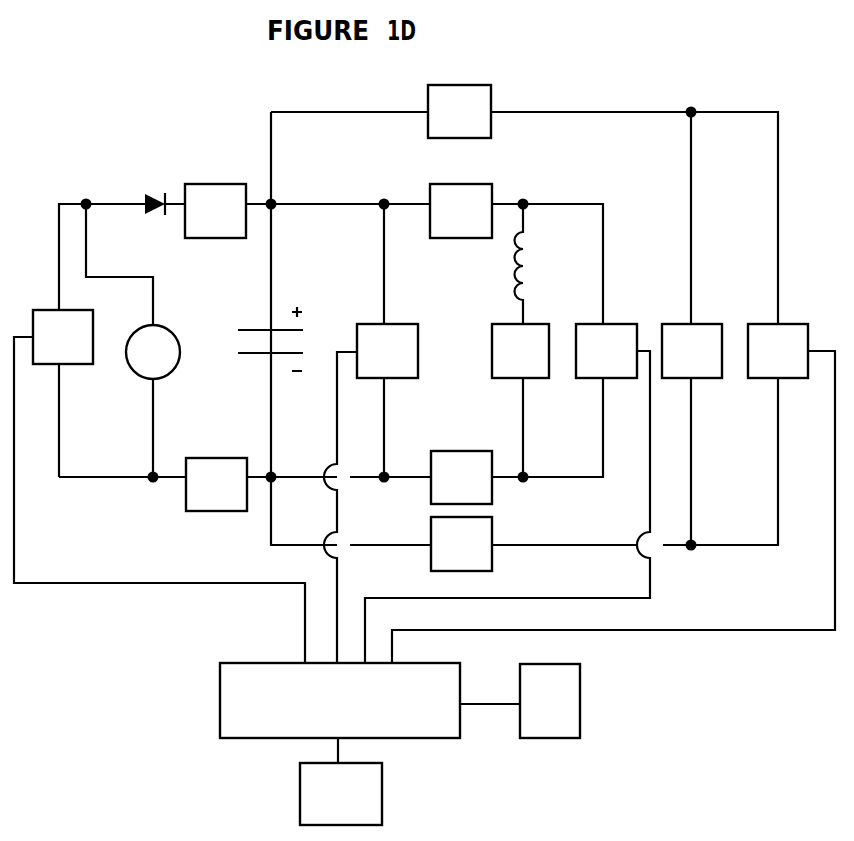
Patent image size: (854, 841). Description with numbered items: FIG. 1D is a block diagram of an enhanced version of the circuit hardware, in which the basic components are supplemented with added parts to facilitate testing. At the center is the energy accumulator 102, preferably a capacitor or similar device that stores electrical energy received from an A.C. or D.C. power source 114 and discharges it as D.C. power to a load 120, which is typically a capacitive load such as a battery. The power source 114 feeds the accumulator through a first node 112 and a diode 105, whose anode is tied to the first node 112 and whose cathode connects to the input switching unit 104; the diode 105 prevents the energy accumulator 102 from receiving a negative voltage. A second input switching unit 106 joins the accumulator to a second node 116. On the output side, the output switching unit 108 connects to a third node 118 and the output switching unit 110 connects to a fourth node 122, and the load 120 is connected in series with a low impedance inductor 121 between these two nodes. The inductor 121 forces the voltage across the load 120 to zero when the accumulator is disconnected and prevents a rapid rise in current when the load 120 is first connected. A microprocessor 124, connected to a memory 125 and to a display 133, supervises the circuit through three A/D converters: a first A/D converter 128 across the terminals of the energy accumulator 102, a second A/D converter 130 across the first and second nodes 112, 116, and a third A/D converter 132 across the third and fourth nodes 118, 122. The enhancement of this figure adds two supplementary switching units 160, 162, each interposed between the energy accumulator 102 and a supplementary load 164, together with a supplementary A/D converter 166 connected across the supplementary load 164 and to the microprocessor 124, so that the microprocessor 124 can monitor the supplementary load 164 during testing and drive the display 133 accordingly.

The energy accumulator 102 is at (310, 330).
The input switching unit 104 is at (215, 211).
The diode 105 is at (159, 182).
The input switching unit 106 is at (216, 484).
The output switching unit 108 is at (461, 211).
The output switching unit 110 is at (461, 477).
The first node 112 is at (92, 195).
The power source 114 is at (153, 352).
The second node 116 is at (148, 472).
The third node 118 is at (527, 195).
The load 120 is at (520, 351).
The low impedance inductor 121 is at (532, 272).
The fourth node 122 is at (529, 471).
The microprocessor 124 is at (340, 700).
The memory 125 is at (341, 794).
The first A/D converter 128 is at (387, 351).
The second A/D converter 130 is at (63, 337).
The third A/D converter 132 is at (606, 351).
The display 133 is at (550, 701).
The supplementary switching unit 160 is at (459, 111).
The supplementary switching unit 162 is at (461, 544).
The supplementary load 164 is at (692, 351).
The supplementary A/D converter 166 is at (778, 351).